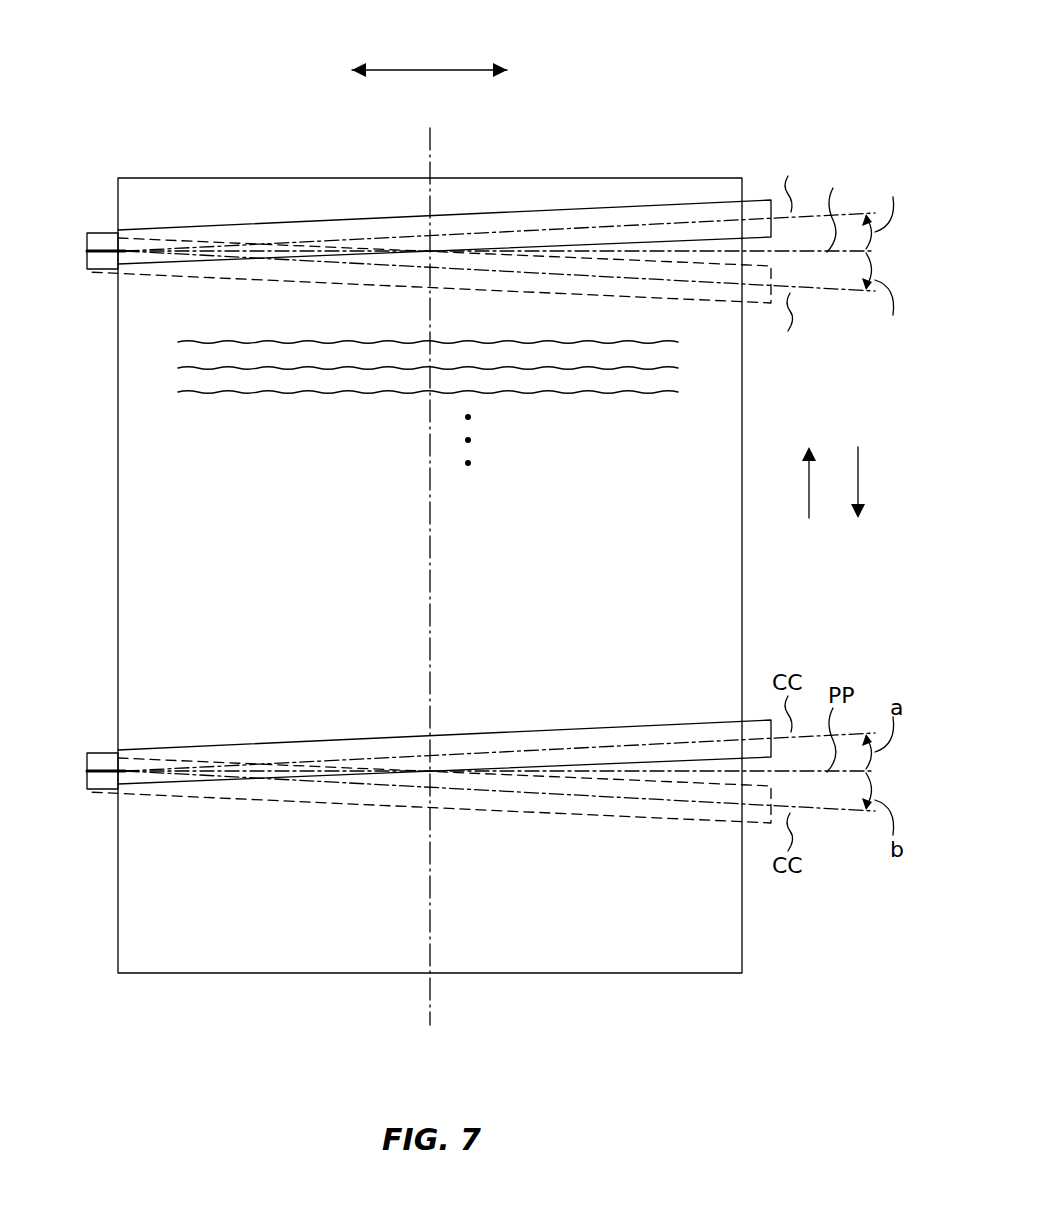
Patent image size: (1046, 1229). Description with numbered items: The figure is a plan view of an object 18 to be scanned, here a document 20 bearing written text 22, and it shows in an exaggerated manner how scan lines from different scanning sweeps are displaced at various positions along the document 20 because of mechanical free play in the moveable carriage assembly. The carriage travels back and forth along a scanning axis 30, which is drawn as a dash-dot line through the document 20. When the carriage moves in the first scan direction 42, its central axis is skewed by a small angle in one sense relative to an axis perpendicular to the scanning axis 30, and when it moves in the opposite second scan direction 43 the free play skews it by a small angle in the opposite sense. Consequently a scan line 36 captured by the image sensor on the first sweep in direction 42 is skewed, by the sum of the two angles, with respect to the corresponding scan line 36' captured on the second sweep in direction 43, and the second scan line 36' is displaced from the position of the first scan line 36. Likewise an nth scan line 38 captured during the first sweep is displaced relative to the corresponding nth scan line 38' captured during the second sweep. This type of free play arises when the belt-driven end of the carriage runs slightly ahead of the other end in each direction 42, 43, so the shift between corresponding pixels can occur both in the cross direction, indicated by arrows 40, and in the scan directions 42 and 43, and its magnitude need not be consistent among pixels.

The object 18 is at (167, 98).
The document 20 is at (118, 375).
The written text 22 is at (215, 395).
The scanning axis 30 is at (431, 1020).
The scan line 36 is at (481, 229).
The second scan line 36' is at (481, 278).
The nth scan line 38 is at (481, 749).
The nth scan line 38' is at (481, 798).
The cross direction arrows 40 is at (430, 69).
The first scan direction 42 is at (858, 465).
The second scan direction 43 is at (809, 503).